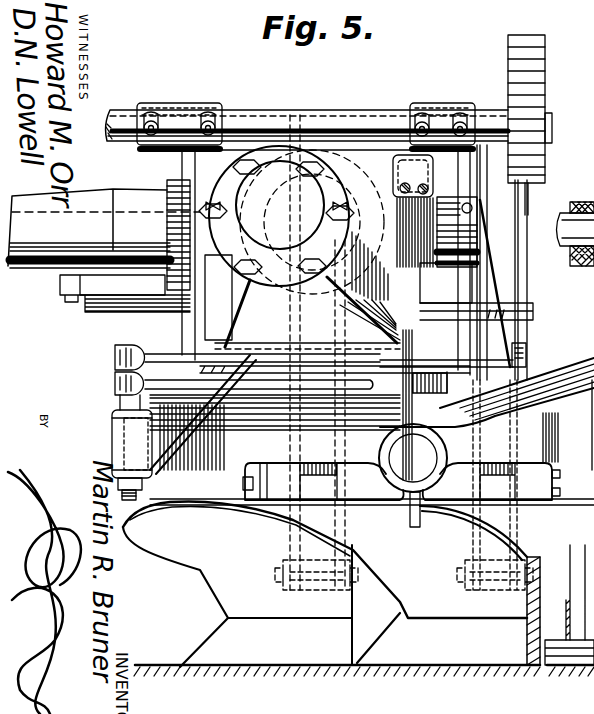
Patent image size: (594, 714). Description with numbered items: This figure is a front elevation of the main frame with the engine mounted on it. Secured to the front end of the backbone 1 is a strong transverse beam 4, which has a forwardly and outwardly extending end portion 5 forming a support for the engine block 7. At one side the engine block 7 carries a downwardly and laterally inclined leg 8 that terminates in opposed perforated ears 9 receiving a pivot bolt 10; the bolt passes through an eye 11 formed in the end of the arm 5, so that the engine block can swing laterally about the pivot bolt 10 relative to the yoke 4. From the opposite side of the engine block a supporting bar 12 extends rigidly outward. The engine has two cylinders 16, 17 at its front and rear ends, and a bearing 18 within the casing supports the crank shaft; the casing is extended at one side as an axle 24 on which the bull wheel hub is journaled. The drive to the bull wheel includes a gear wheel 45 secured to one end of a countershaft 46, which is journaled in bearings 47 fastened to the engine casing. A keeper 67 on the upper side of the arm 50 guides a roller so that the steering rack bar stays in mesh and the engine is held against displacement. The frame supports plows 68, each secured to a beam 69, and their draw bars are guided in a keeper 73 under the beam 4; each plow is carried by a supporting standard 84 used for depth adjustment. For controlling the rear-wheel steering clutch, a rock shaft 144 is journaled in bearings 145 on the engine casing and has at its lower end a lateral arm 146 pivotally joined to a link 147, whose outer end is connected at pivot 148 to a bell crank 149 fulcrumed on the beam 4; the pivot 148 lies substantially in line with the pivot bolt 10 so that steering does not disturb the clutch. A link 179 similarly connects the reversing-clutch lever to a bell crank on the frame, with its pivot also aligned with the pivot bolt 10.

The backbone 1 is at (443, 388).
The transverse beam 4 is at (372, 406).
The end portion 5 is at (183, 458).
The engine block 7 is at (400, 301).
The inclined leg 8 is at (193, 356).
The perforated ears 9 is at (112, 419).
The pivot bolt 10 is at (137, 496).
The eye 11 is at (118, 447).
The supporting bar 12 is at (275, 419).
The cylinder 16 is at (279, 216).
The cylinder 17 is at (380, 240).
The bearing 18 is at (228, 211).
The axle 24 is at (104, 235).
The gear wheel 45 is at (536, 71).
The countershaft 46 is at (256, 118).
The bearings 47 is at (188, 108).
The arm 50 is at (125, 297).
The keeper 67 is at (73, 281).
The plows 68 is at (331, 584).
The beam 69 is at (401, 475).
The keeper 73 is at (566, 503).
The supporting standard 84 is at (496, 270).
The rock shaft 144 is at (517, 201).
The bearings 145 is at (533, 313).
The arm 146 is at (528, 354).
The link 147 is at (442, 358).
The pivot 148 is at (122, 350).
The bell crank 149 is at (120, 359).
The link 179 is at (335, 378).